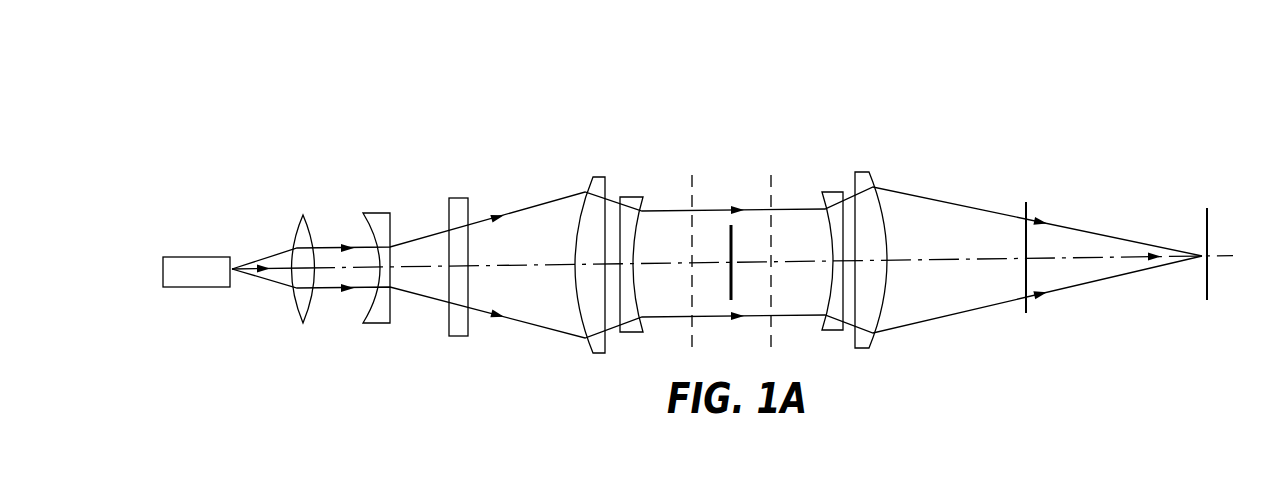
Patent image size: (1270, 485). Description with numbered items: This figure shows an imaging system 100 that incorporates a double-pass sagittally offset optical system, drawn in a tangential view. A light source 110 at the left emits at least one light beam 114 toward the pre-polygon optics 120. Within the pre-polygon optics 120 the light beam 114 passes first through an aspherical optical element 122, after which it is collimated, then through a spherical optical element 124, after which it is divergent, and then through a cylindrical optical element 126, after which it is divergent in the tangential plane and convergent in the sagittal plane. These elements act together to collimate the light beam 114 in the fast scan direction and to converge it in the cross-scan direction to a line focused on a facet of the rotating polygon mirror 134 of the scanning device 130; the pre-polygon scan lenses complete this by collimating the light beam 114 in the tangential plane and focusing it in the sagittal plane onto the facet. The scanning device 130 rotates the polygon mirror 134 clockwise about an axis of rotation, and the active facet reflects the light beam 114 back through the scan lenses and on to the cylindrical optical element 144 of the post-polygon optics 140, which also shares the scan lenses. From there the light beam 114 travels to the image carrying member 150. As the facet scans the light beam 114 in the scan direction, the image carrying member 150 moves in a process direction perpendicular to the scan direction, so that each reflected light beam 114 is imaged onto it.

The imaging system 100 is at (1077, 70).
The light source 110 is at (173, 257).
The light beam 114 is at (268, 282).
The pre-polygon optics 120 is at (667, 128).
The aspherical optical element 122 is at (297, 222).
The spherical optical element 124 is at (380, 213).
The cylindrical optical element 126 is at (456, 198).
The scanning device 130 is at (734, 156).
The polygon mirror 134 is at (728, 237).
The post-polygon optics 140 is at (1037, 122).
The cylindrical optical element 144 is at (1027, 210).
The image carrying member 150 is at (1206, 292).